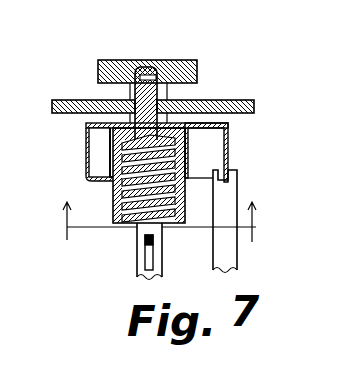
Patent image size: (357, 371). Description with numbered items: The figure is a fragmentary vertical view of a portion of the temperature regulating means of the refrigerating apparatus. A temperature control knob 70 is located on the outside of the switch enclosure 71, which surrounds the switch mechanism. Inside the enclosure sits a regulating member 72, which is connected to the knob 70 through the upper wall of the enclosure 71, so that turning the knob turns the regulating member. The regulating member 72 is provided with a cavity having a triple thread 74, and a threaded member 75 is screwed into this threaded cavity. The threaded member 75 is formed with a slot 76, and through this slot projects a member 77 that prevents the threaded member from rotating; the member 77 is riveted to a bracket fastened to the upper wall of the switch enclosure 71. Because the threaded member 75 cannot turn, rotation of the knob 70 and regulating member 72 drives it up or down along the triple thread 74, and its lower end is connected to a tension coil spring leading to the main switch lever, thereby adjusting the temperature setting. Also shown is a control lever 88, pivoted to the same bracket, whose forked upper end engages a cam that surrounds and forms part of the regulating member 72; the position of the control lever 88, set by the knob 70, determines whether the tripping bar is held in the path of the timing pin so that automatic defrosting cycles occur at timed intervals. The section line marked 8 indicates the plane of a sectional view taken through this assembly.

The knob 70 is at (127, 70).
The switch enclosure 71 is at (83, 103).
The regulating member 72 is at (113, 195).
The triple thread 74 is at (120, 180).
The threaded member 75 is at (187, 176).
The slot 76 is at (137, 273).
The member 77 is at (155, 243).
The control lever 88 is at (228, 199).
The section line 8- 8 is at (158, 223).